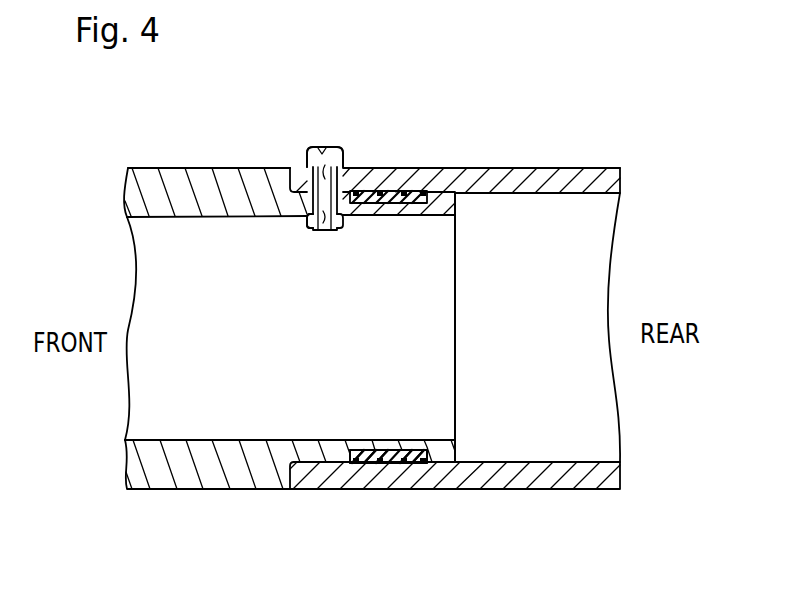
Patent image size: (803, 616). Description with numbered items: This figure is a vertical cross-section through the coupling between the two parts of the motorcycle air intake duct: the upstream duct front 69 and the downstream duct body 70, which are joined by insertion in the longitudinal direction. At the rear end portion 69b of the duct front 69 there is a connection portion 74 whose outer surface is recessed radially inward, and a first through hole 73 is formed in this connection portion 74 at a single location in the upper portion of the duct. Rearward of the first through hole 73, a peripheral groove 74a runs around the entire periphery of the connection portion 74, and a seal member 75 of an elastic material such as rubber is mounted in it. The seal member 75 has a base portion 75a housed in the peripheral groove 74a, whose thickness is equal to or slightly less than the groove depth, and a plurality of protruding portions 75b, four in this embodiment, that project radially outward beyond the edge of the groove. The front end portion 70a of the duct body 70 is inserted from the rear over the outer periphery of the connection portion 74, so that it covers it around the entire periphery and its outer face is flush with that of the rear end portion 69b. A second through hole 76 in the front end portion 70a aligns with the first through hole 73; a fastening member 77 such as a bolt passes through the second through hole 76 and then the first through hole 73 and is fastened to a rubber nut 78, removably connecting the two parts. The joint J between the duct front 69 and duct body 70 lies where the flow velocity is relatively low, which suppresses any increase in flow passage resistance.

The duct front 69 is at (155, 166).
The rear end portion of the duct front 69b is at (232, 178).
The duct body 70 is at (585, 163).
The front end portion of the duct body 70a is at (300, 176).
The first through hole 73 is at (333, 229).
The connection portion 74 is at (322, 441).
The peripheral groove 74a is at (363, 450).
The seal member 75 is at (458, 553).
The base portion 75a is at (424, 465).
The protruding portions 75b is at (374, 465).
The second through hole 76 is at (328, 173).
The fastening member 77 is at (320, 147).
The rubber nut 78 is at (309, 227).
The joint J is at (455, 420).